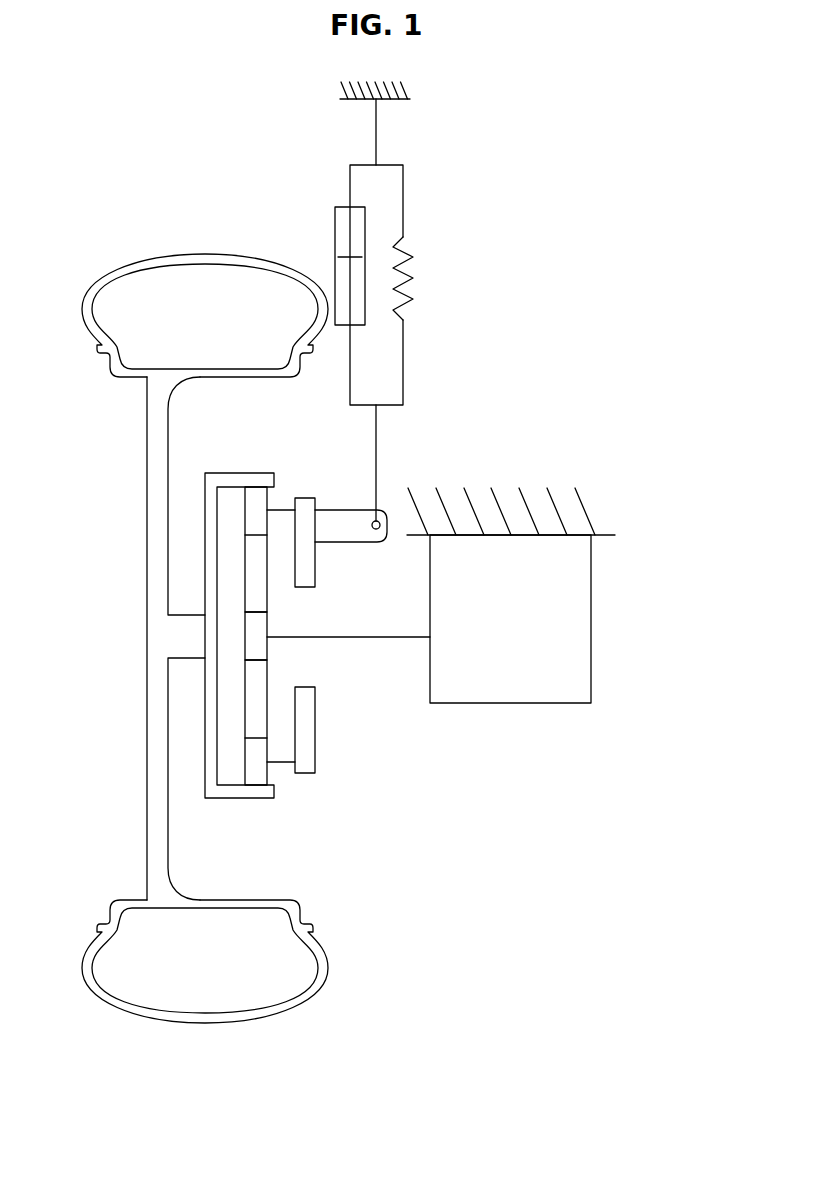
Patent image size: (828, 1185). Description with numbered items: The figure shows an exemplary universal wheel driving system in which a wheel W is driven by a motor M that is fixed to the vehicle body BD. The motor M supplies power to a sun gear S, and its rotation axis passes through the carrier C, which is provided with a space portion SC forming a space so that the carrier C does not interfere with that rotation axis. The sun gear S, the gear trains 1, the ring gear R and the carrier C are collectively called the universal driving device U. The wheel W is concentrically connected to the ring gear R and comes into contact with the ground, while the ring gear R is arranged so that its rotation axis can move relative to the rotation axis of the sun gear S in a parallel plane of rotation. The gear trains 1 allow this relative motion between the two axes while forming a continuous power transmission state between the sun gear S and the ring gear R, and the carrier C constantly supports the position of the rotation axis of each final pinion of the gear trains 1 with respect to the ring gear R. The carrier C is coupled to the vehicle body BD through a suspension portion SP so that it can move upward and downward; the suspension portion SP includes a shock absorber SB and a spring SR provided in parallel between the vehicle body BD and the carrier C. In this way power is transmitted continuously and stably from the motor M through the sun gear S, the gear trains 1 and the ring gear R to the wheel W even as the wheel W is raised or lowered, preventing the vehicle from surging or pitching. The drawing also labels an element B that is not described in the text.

The wheel W is at (157, 258).
The universal driving device U is at (188, 488).
The gear trains 1 is at (234, 556).
The sun gear S is at (255, 633).
The space portion SC is at (303, 687).
The carrier C is at (308, 577).
The bearing B is at (260, 773).
The ring gear R is at (262, 797).
The motor M is at (580, 626).
The vehicle body BD is at (404, 90).
The suspension portion SP is at (510, 205).
The shock absorber SB is at (365, 222).
The spring SR is at (412, 285).